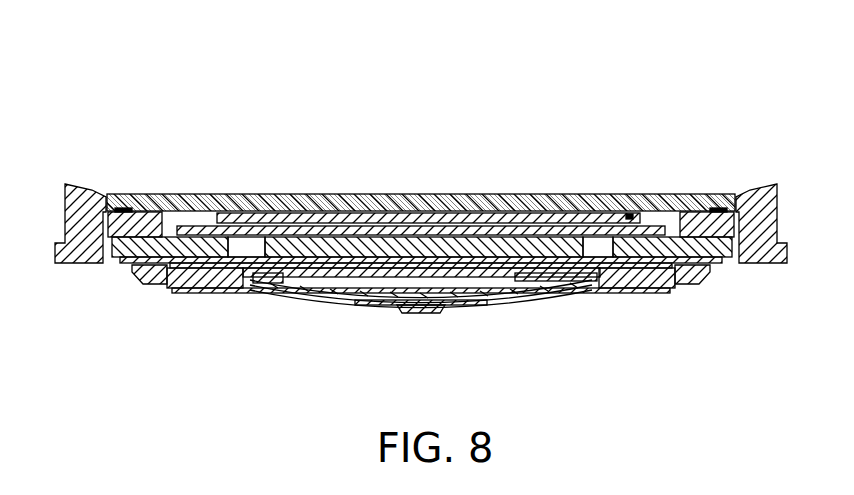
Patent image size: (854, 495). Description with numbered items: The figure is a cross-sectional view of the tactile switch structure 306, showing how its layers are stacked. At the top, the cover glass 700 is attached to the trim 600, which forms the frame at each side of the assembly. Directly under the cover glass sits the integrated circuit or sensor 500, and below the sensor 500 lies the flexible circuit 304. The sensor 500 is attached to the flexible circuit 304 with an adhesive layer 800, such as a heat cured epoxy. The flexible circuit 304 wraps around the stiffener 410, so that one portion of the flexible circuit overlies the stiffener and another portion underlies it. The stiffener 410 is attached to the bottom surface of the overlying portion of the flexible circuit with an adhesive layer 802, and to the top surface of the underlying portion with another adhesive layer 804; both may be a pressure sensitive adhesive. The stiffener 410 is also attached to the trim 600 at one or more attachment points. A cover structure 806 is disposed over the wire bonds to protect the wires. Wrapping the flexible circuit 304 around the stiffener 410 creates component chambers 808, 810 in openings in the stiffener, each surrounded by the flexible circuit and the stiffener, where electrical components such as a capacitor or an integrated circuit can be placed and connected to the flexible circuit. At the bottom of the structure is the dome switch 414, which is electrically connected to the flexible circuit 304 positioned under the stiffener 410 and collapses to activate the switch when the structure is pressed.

The tactile switch structure 306 is at (430, 74).
The trim 600 is at (88, 190).
The integrated circuit or sensor 500 is at (420, 207).
The cover glass 700 is at (465, 203).
The cover structure 806 is at (628, 220).
The flexible circuit 304 is at (358, 232).
The stiffener 410 is at (160, 237).
The adhesive layer 802 is at (250, 248).
The component chamber 810 is at (602, 248).
The adhesive layer 800 is at (525, 222).
The adhesive layer 804 is at (180, 293).
The component chamber 808 is at (233, 288).
The dome switch 414 is at (420, 338).